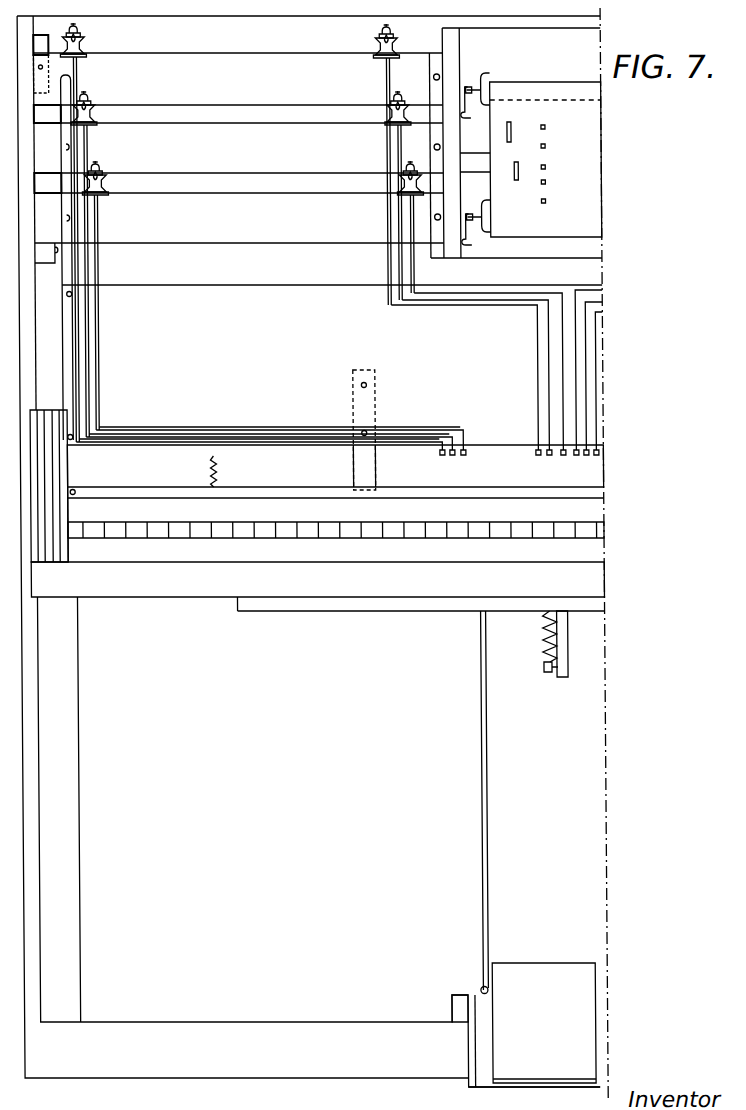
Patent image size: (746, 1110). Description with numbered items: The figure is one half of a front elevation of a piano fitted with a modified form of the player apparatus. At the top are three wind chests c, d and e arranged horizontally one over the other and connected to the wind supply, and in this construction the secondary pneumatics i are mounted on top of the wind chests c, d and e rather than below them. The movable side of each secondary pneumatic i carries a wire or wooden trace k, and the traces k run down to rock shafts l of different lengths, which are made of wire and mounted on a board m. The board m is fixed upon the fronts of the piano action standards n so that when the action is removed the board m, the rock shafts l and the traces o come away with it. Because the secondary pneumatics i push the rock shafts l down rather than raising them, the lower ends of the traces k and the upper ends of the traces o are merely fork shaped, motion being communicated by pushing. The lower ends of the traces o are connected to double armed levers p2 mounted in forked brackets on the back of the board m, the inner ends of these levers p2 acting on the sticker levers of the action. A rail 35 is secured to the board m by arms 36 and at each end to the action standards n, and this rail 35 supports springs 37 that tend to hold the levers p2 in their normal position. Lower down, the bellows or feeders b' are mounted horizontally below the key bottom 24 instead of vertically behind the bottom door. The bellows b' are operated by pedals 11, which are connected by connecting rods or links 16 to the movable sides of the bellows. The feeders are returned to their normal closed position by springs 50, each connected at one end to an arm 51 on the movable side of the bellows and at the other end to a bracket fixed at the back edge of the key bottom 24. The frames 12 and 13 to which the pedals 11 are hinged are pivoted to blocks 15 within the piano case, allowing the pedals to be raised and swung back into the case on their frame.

The secondary pneumatics i is at (87, 46).
The trace k is at (80, 352).
The rock shaft l is at (153, 436).
The trace o is at (230, 428).
The board m is at (306, 339).
The piano action standards n is at (70, 462).
The double armed levers p2 is at (382, 464).
The wind chest c is at (237, 71).
The wind chest d is at (238, 135).
The wind chest e is at (239, 218).
The key bottom 24 is at (317, 579).
The bellows or feeders b' is at (420, 622).
The rail 35 is at (448, 491).
The arms 36 is at (352, 463).
The springs 37 is at (216, 470).
The springs 50 is at (539, 634).
The arm 51 is at (561, 646).
The connecting rods or links 16 is at (482, 757).
The pedals 11 is at (544, 1009).
The blocks 15 is at (452, 995).
The frame 12 is at (461, 1046).
The frame 13 is at (535, 1098).